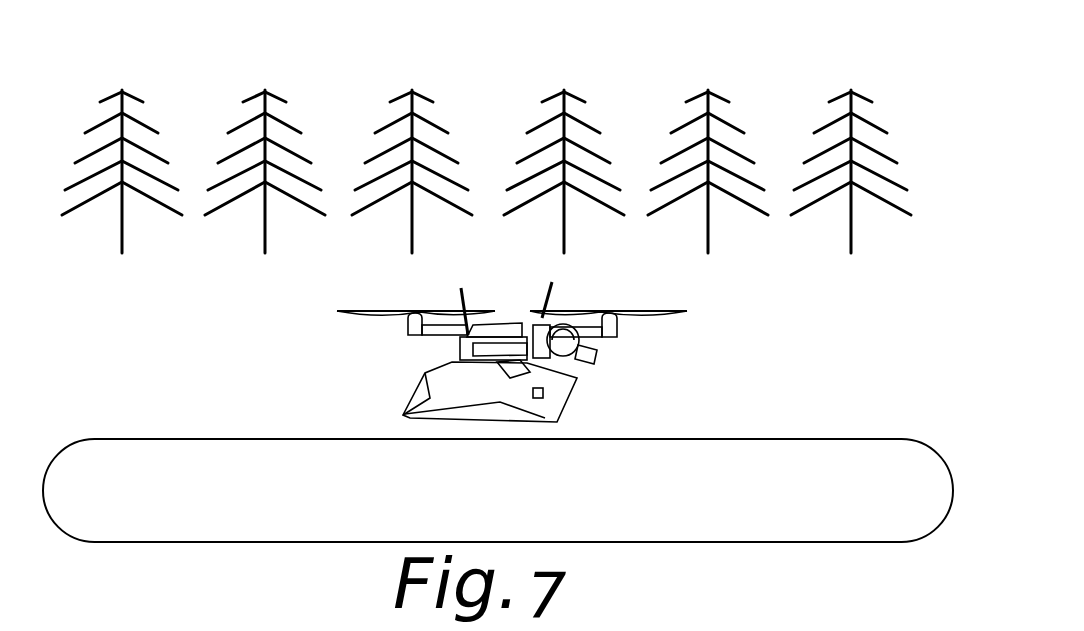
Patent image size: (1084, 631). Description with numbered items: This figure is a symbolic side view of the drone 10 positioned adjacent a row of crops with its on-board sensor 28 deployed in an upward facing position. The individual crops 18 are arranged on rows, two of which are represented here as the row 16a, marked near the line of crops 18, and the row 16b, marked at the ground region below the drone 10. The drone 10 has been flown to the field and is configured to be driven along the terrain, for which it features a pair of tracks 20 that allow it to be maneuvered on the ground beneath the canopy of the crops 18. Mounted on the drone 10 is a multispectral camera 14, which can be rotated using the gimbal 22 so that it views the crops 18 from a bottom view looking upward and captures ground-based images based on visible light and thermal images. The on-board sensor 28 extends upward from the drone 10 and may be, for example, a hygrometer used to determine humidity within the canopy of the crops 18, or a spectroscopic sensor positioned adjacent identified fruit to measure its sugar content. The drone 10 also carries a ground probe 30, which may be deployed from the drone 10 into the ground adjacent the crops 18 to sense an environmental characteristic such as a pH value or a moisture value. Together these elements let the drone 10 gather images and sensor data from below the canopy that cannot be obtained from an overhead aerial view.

The drone 10 is at (428, 397).
The multispectral camera 14 is at (598, 352).
The row 16a is at (903, 82).
The row 16b is at (903, 497).
The crops 18 is at (486, 148).
The tracks 20 is at (560, 395).
The gimbal 22 is at (565, 358).
The on-board sensor 28 is at (458, 299).
The ground probe 30 is at (553, 292).